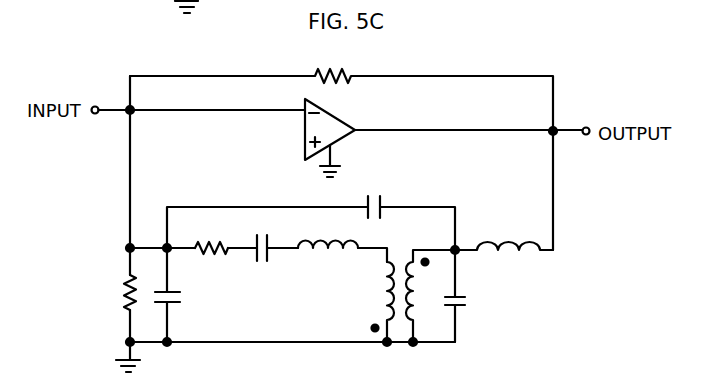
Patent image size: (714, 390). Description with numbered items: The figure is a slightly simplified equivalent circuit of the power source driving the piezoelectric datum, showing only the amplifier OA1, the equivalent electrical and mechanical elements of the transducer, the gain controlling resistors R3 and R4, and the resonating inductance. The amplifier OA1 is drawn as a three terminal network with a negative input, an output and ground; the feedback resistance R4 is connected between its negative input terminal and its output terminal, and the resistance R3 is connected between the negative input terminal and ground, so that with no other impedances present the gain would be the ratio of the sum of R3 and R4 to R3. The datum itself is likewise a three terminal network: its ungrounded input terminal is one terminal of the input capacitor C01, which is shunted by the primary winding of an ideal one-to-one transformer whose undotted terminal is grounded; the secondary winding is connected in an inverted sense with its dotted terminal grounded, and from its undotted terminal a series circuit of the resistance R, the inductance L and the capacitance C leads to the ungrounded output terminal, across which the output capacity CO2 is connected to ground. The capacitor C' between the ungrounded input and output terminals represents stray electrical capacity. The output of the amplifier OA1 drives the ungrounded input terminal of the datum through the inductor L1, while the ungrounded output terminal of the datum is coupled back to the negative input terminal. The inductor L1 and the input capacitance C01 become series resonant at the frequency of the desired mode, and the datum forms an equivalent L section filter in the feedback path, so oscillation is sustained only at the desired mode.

The feedback resistance R4 is at (341, 149).
The amplifier OA1 is at (347, 138).
The capacitor C' is at (311, 210).
The series RLC circuit resistance R is at (211, 263).
The series RLC circuit inductance L is at (262, 262).
The series RLC circuit capacitance C is at (328, 260).
The resistance R3 is at (116, 292).
The output capacity CO2 is at (191, 295).
The input capacitor C01 is at (478, 296).
The inductor L1 is at (504, 234).